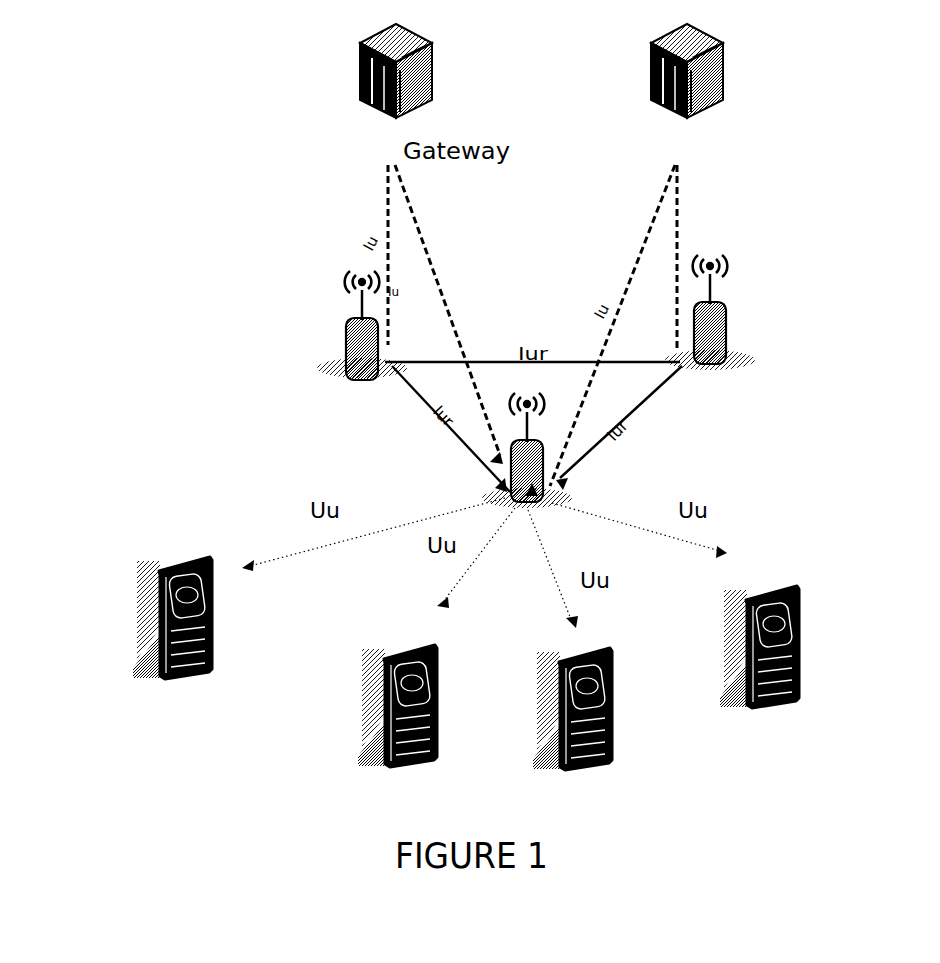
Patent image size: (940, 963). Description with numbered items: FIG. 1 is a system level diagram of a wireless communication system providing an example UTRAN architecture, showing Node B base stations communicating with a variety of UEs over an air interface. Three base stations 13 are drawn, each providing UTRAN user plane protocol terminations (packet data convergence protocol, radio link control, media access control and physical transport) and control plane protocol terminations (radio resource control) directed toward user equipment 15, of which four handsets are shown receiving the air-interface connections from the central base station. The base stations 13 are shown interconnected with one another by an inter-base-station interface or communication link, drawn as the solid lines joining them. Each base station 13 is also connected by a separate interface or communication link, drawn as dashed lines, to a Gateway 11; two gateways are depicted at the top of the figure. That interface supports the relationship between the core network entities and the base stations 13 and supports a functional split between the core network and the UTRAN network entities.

The Gateway 11 is at (722, 98).
The base station 13 is at (348, 362).
The user equipment 15 is at (165, 630).